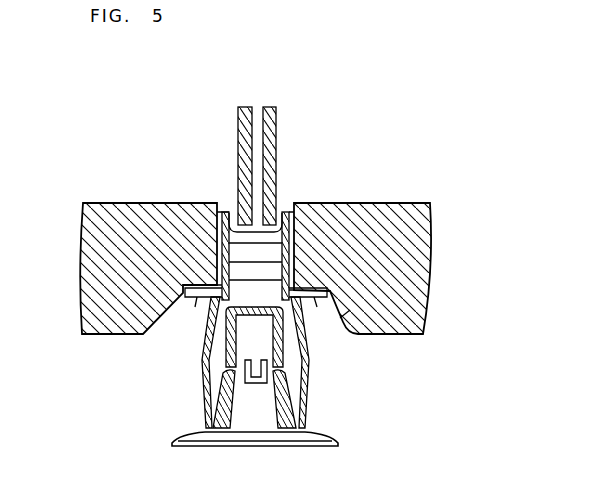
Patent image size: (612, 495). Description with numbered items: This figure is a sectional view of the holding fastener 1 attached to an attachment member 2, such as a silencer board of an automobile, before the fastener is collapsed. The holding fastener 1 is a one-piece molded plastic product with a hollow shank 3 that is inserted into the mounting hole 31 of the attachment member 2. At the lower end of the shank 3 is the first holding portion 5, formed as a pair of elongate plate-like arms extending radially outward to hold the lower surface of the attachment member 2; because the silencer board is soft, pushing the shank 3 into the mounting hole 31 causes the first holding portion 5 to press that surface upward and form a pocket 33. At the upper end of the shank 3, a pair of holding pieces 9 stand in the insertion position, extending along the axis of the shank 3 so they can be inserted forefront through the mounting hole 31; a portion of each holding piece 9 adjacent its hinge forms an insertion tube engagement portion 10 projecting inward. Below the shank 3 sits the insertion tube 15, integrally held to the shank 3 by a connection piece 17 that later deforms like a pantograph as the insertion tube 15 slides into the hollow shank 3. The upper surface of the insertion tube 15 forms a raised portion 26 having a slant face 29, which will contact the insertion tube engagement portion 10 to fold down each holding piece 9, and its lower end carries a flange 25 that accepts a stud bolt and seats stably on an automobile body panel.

The holding fastener 1 is at (322, 165).
The attachment member 2 is at (365, 212).
The shank 3 is at (295, 250).
The first holding portion 5 is at (196, 300).
The holding piece 9 is at (239, 119).
The insertion tube engagement portion 10 is at (219, 245).
The insertion tube 15 is at (213, 406).
The connection piece 17 is at (206, 350).
The flange 25 is at (312, 436).
The raised portion 26 is at (258, 318).
The slant face 29 is at (226, 322).
The mounting hole 31 is at (226, 211).
The pocket 33 is at (347, 319).